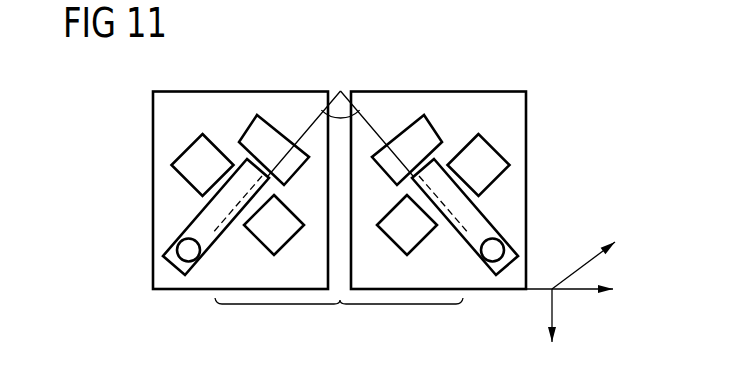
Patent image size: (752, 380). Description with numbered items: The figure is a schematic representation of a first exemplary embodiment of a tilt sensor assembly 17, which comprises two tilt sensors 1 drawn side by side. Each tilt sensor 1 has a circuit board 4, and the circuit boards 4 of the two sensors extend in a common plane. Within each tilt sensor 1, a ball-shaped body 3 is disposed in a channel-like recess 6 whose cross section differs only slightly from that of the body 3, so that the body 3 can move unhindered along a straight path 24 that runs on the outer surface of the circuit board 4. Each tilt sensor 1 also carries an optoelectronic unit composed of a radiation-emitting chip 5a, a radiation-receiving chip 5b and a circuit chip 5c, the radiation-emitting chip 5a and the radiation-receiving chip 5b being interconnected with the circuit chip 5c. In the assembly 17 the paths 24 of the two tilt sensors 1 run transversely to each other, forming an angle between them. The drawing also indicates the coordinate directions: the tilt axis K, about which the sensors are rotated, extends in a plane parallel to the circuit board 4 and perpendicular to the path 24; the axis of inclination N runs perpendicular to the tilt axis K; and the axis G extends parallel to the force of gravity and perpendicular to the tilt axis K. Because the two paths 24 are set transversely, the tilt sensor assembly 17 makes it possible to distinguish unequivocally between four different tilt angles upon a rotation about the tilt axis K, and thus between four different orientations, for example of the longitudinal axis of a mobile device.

The tilt sensor 1 is at (313, 82).
The body 3 is at (190, 252).
The circuit board 4 is at (165, 123).
The radiation-emitting chip 5a is at (200, 153).
The radiation-receiving chip 5b is at (280, 228).
The circuit chip 5c is at (267, 140).
The recess 6 is at (201, 223).
The path 24 is at (218, 232).
The tilt sensor assembly 17 is at (339, 318).
The tilt axis K is at (594, 259).
The axis of inclination N is at (582, 293).
The axis parallel to the force of gravity G is at (564, 320).